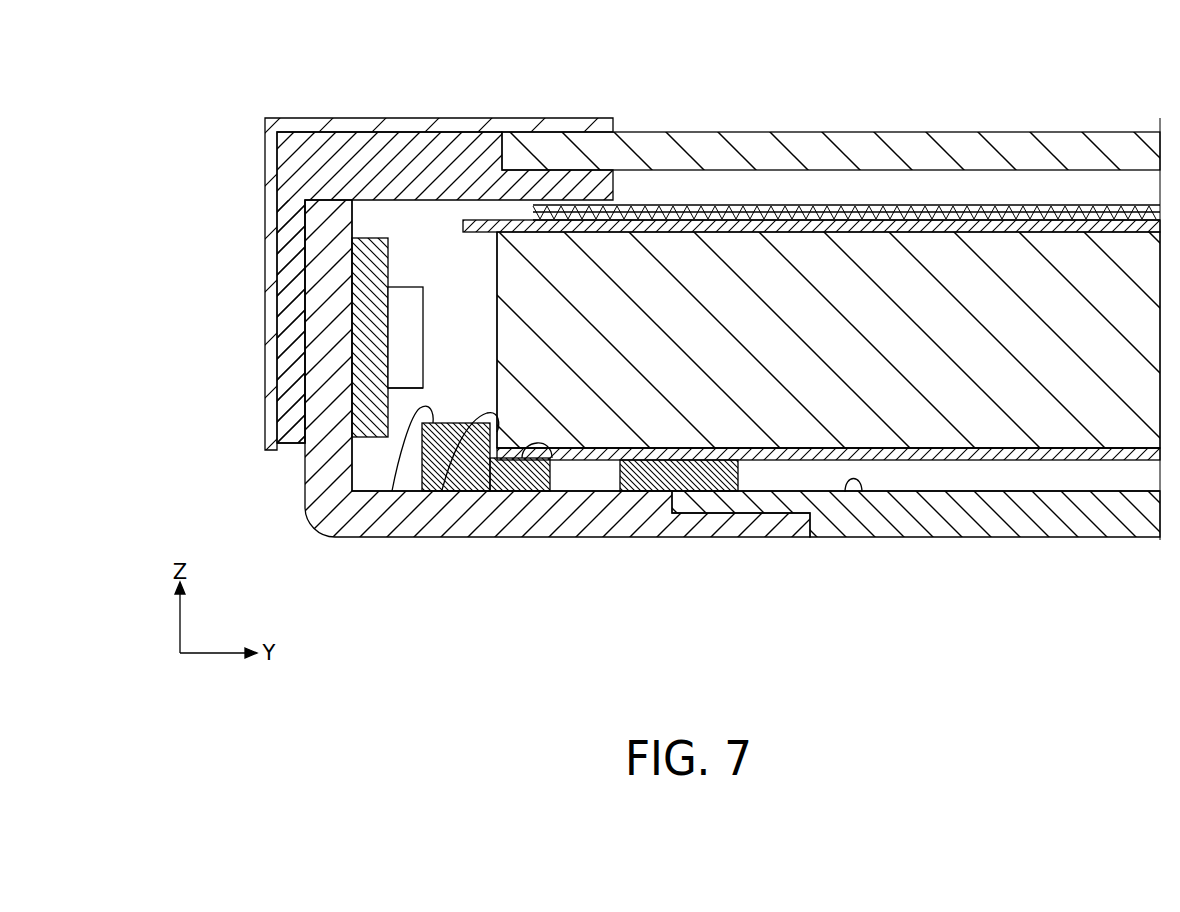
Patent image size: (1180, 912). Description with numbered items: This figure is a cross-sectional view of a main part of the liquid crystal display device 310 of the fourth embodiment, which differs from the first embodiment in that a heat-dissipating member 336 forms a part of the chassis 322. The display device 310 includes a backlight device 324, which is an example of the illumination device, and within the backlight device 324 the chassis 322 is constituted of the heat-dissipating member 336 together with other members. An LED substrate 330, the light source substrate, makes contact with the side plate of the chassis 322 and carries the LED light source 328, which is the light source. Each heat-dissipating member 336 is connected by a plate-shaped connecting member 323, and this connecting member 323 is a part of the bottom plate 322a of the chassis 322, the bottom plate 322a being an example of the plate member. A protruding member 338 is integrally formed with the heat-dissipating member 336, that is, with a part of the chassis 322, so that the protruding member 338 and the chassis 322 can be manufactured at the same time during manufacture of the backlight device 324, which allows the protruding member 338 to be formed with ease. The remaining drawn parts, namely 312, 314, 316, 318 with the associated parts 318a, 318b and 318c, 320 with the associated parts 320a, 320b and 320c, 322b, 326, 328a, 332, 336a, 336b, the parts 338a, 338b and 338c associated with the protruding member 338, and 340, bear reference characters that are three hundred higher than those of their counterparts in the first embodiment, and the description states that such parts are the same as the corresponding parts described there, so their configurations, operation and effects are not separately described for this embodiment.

The liquid crystal display device 310 is at (798, 84).
The frame 312 is at (300, 126).
The upper frame plate 314 is at (384, 148).
The top plate / diffuser 316 is at (706, 152).
The optical sheet stack 318 is at (846, 130).
The first optical sheet 318a is at (958, 214).
The second optical sheet 318b is at (1022, 214).
The third optical sheet 318c is at (947, 80).
The light guide plate 320 is at (802, 330).
The light entry surface of light guide plate 320a is at (497, 275).
The upper sheet of light guide plate 320b is at (870, 228).
The bottom surface of light guide plate 320c is at (1118, 460).
The chassis 322 is at (670, 342).
The bottom plate 322a is at (851, 493).
The side portion of chassis 322b is at (292, 348).
The connecting member 323 is at (915, 507).
The backlight device 324 is at (790, 592).
The reflection sheet 326 is at (1000, 455).
The LED light source 328 is at (305, 373).
The light emitting surface of LED 328a is at (405, 392).
The LED substrate 330 is at (367, 332).
The light source unit 332 is at (278, 362).
The heat-dissipating member 336 is at (499, 401).
The bottom portion of housing frame 336a is at (612, 505).
The side portion of housing frame 336b is at (330, 368).
The protruding member 338 is at (463, 514).
The connector base 338a is at (545, 460).
The connector lead wire 338b is at (391, 492).
The connector lead wire 338c is at (437, 492).
The spacer 340 is at (692, 475).